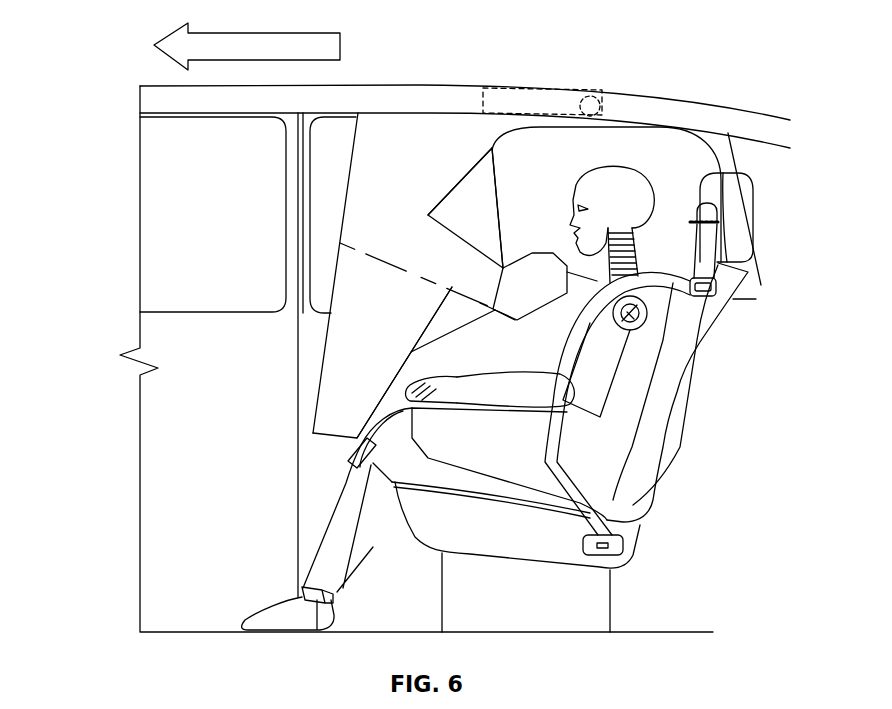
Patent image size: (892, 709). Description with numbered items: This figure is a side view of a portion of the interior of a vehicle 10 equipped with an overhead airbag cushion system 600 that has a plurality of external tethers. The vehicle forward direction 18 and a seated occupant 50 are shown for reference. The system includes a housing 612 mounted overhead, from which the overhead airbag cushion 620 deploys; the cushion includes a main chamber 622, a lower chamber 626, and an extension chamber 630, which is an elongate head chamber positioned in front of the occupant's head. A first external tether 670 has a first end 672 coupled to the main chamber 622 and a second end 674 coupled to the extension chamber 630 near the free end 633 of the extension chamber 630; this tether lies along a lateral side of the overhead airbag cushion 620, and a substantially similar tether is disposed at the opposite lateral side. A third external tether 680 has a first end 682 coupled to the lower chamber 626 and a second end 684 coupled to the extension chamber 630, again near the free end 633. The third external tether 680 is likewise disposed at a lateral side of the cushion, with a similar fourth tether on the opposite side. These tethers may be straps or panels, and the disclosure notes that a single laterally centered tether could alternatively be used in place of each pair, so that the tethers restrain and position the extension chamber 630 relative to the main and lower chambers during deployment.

The vehicle 10 is at (726, 94).
The vehicle forward direction 18 is at (263, 33).
The occupant 50 is at (598, 161).
The overhead airbag cushion system 600 is at (437, 58).
The housing 612 is at (527, 95).
The overhead airbag cushion 620 is at (413, 237).
The main chamber 622 is at (363, 195).
The lower chamber 626 is at (312, 408).
The extension chamber 630 is at (542, 301).
The free end 633 is at (645, 322).
The first external tether 670 is at (497, 210).
The first end 672 is at (493, 185).
The second end 674 is at (503, 265).
The third external tether 680 is at (448, 328).
The first end 682 is at (427, 341).
The second end 684 is at (493, 313).